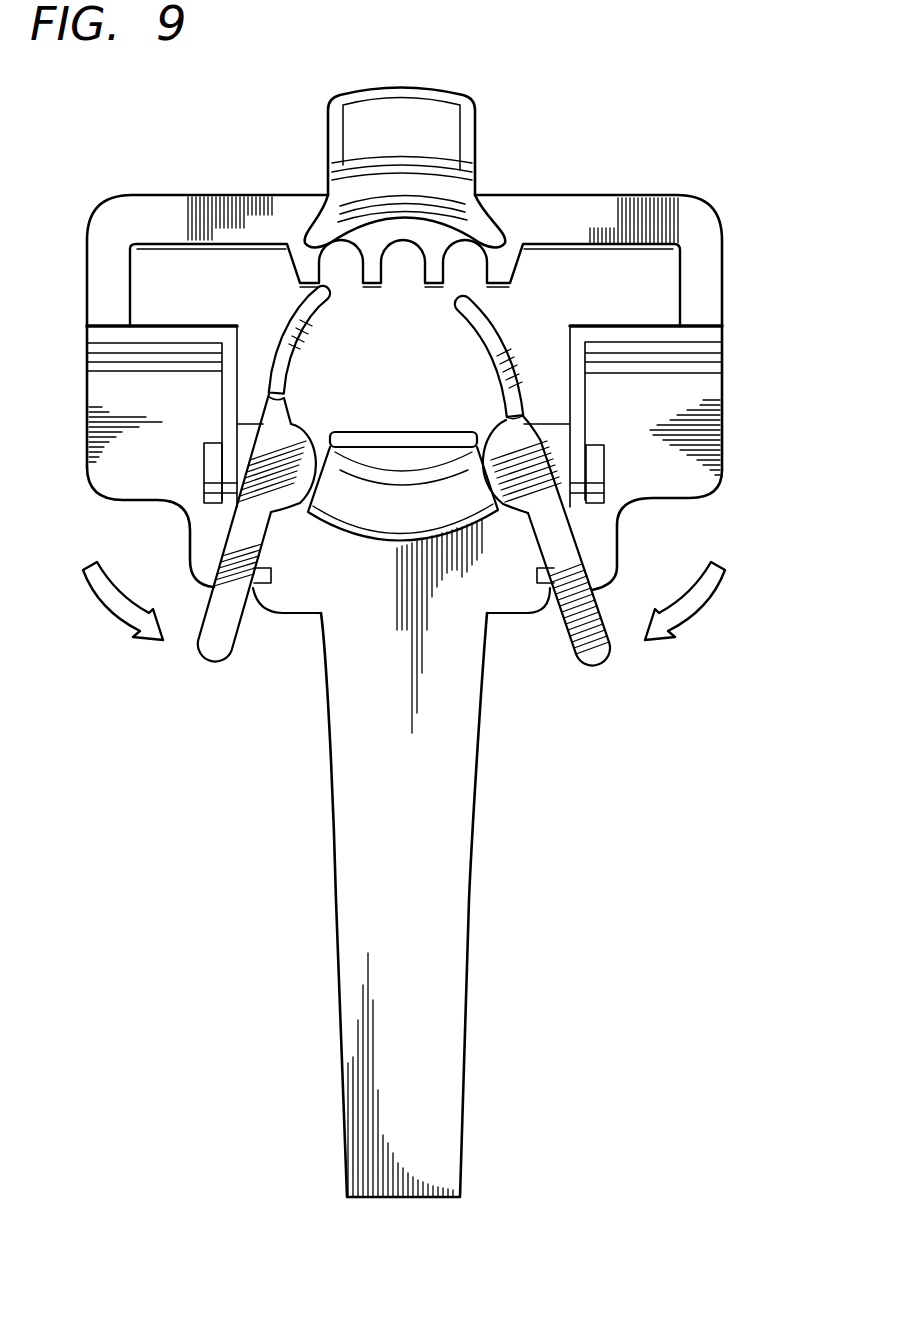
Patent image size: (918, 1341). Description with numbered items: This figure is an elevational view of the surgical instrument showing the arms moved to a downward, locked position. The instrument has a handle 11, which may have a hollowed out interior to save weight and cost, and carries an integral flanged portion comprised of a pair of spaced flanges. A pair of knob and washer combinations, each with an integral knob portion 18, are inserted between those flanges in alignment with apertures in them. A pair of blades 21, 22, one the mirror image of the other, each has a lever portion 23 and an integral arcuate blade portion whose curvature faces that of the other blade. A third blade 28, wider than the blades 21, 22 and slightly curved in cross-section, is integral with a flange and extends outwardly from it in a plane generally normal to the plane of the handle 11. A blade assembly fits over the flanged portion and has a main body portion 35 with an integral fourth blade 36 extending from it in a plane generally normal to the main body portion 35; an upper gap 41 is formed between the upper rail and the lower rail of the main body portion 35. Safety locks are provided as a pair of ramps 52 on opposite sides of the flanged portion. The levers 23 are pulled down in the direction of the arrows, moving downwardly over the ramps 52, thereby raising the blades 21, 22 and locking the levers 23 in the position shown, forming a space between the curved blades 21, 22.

The handle 11 is at (335, 903).
The knob portion 18 is at (605, 465).
The blade 21 is at (309, 316).
The blade 22 is at (494, 328).
The lever portion 23 is at (233, 646).
The third blade 28 is at (414, 440).
The main body portion 35 is at (722, 252).
The fourth blade 36 is at (428, 113).
The upper gap 41 is at (549, 252).
The ramp 52 is at (540, 573).